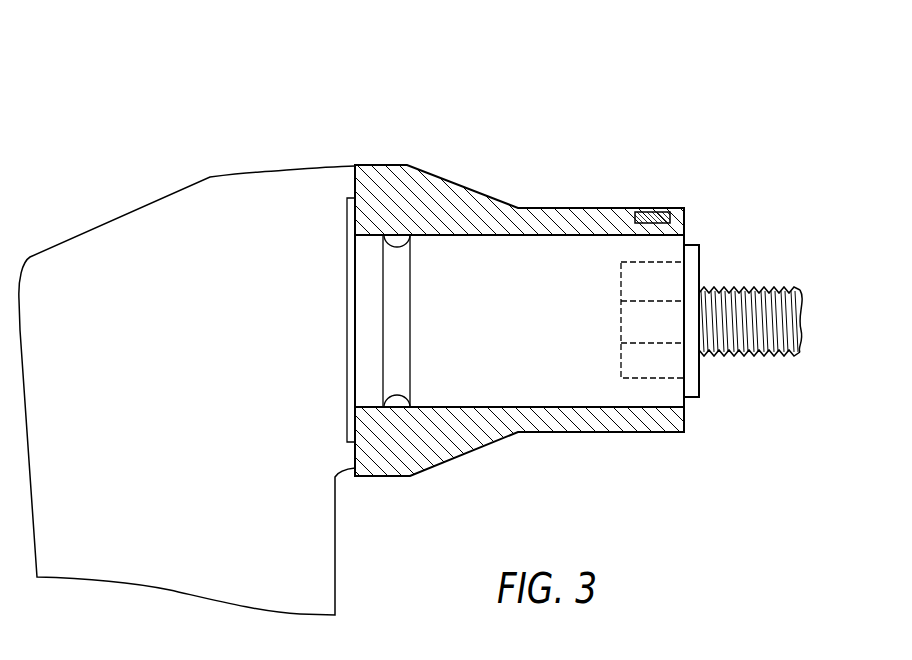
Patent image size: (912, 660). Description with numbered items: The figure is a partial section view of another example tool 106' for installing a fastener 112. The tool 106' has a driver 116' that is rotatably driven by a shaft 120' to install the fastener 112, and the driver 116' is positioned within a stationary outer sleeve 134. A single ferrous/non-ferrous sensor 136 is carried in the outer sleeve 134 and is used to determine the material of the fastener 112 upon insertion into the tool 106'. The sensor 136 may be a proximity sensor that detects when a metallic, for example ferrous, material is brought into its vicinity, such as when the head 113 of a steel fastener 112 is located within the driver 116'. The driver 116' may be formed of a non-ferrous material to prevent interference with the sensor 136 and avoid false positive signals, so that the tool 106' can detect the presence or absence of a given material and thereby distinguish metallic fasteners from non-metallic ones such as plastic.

The tool 106' is at (187, 320).
The shaft 120' is at (351, 266).
The stationary outer sleeve 134 is at (417, 200).
The sensor 136 is at (648, 210).
The fastener 112 is at (772, 257).
The driver 116' is at (515, 357).
The head portion 113 is at (652, 363).